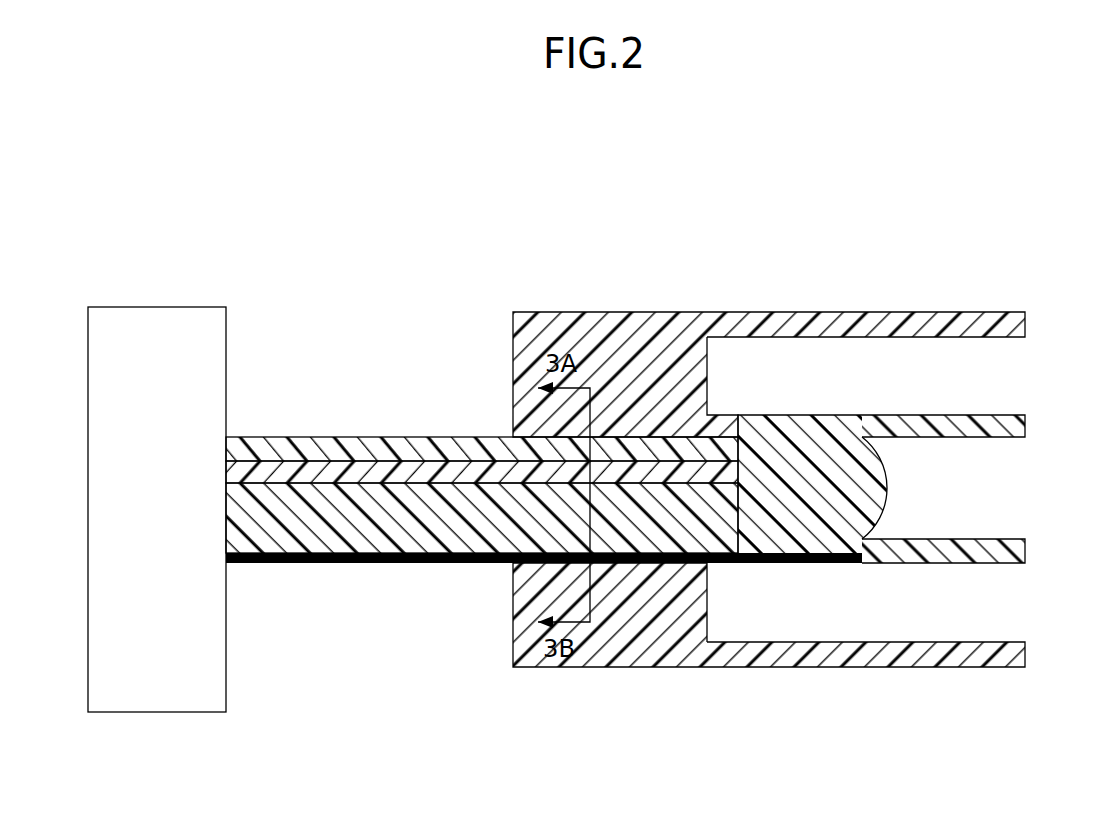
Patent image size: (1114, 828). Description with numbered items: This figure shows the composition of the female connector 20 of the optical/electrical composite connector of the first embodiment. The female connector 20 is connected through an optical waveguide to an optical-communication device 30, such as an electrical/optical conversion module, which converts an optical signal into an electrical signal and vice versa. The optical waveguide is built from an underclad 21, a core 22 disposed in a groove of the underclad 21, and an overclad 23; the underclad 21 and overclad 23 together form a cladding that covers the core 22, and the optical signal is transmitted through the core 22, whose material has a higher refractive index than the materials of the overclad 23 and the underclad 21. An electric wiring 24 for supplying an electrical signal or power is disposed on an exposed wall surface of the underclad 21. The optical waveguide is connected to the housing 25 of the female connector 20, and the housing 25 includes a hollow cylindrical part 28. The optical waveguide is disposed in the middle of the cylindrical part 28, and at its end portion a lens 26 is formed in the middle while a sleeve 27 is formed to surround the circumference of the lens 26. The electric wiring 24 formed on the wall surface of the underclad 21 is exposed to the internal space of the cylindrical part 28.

The female connector 20 is at (791, 472).
The underclad 21 is at (388, 527).
The core 22 is at (325, 473).
The overclad 23 is at (405, 449).
The electric wiring 24 is at (459, 567).
The housing 25 is at (652, 653).
The lens 26 is at (886, 475).
The sleeve 27 is at (1015, 428).
The cylindrical part 28 is at (896, 322).
The optical-communication device 30 is at (208, 307).